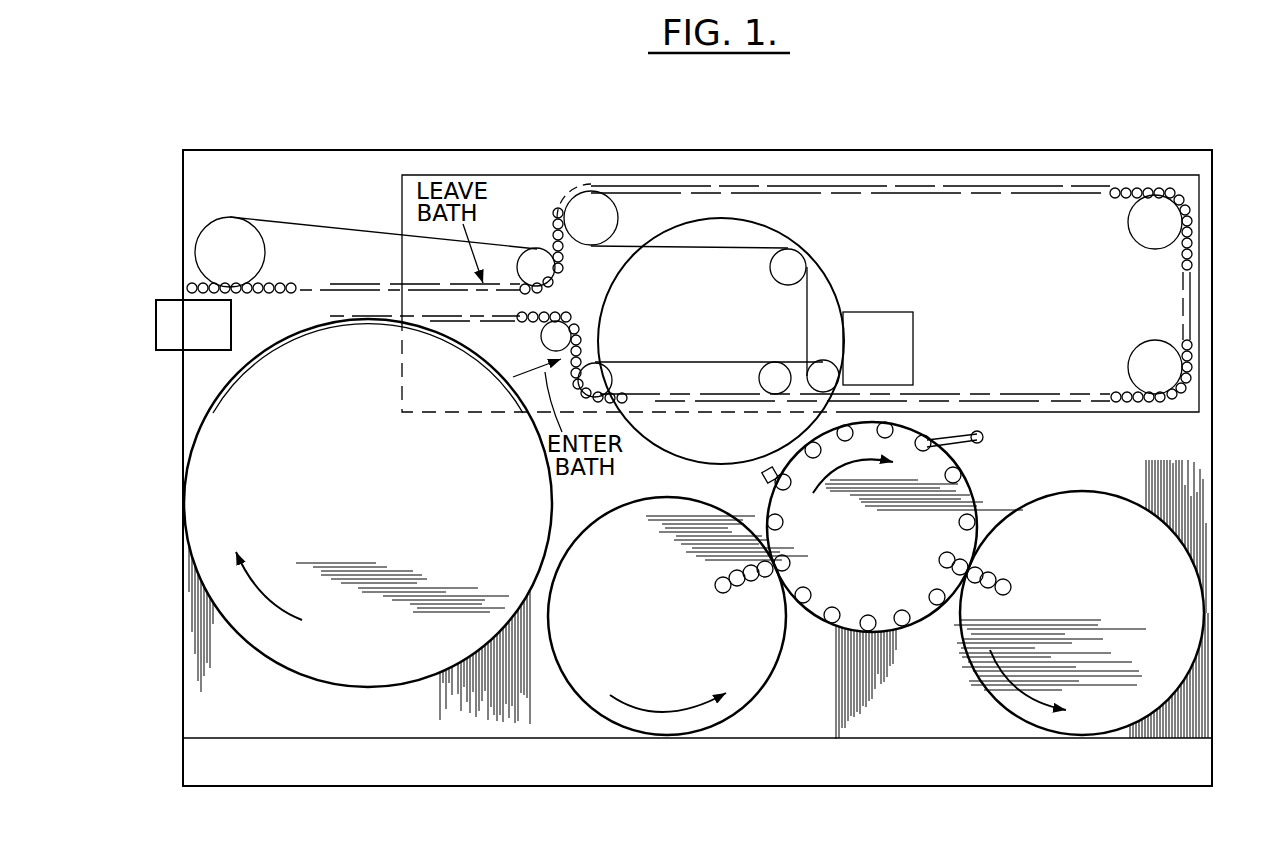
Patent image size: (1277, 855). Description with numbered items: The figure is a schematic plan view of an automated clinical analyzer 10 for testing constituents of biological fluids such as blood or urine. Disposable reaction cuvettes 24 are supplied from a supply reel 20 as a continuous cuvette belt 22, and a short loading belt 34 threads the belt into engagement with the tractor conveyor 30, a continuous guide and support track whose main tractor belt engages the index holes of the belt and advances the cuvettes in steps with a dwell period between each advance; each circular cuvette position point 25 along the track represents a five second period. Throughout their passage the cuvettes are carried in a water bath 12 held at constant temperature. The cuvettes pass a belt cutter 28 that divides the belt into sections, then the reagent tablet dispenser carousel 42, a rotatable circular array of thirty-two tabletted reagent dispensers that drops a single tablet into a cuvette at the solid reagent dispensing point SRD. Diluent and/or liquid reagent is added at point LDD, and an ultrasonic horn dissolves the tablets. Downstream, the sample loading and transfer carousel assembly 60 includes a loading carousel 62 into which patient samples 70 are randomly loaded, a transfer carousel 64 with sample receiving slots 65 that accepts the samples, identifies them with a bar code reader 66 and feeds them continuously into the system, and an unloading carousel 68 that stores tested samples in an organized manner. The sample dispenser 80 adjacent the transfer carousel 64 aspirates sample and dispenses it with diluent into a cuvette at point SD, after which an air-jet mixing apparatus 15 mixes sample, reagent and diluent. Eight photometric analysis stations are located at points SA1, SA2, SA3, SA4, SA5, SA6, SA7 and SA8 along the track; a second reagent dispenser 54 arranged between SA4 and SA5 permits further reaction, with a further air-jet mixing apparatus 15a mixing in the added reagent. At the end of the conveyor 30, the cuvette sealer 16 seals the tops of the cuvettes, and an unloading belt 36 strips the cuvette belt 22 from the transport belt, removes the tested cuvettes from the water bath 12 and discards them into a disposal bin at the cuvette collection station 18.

The automated clinical analyzer 10 is at (165, 558).
The water bath 12 is at (1054, 294).
The air-jet mixing apparatus 15 is at (955, 393).
The further air-jet mixing apparatus 15a is at (1183, 190).
The cuvette sealer 16 is at (625, 186).
The cuvette collection station 18 is at (203, 337).
The supply reel 20 is at (313, 512).
The cuvette belt 22 is at (462, 324).
The cuvette 24 is at (540, 320).
The circular cuvette position point 25 is at (1082, 404).
The belt cutter 28 is at (798, 402).
The tractor conveyor 30 is at (667, 402).
The loading belt 34 is at (633, 362).
The unloading belt 36 is at (308, 226).
The reagent tablet dispenser carousel 42 is at (679, 289).
The second reagent dispenser 54 is at (1190, 210).
The sample loading and transfer carousel assembly 60 is at (907, 636).
The loading carousel 62 is at (603, 599).
The transfer carousel 64 is at (836, 532).
The sample receiving slot 65 is at (827, 625).
The bar code reader 66 is at (764, 485).
The unloading carousel 68 is at (1071, 669).
The patient sample 70 is at (740, 592).
The sample dispenser 80 is at (980, 443).
The analysis station point SA1 is at (928, 393).
The analysis station point SA2 is at (1137, 405).
The analysis station point SA3 is at (1192, 346).
The analysis station point SA4 is at (1190, 287).
The analysis station point SA5 is at (1128, 186).
The analysis station point SA6 is at (940, 186).
The analysis station point SA7 is at (794, 186).
The analysis station point SA8 is at (651, 186).
The liquid dispensing point LDD is at (832, 392).
The solid reagent dispensing point SRD is at (820, 392).
The sample dispensing point SD is at (937, 402).